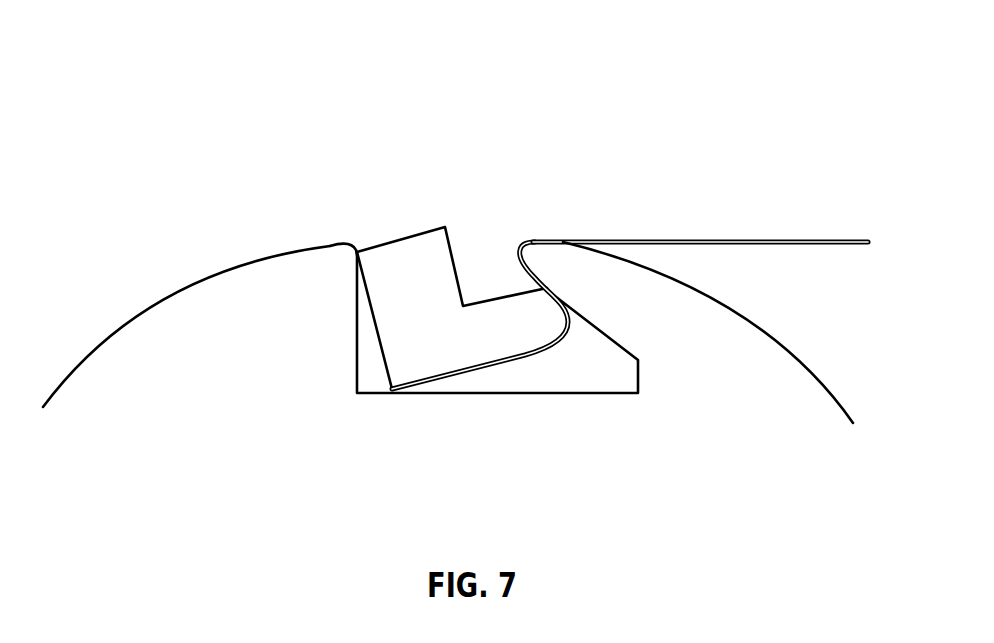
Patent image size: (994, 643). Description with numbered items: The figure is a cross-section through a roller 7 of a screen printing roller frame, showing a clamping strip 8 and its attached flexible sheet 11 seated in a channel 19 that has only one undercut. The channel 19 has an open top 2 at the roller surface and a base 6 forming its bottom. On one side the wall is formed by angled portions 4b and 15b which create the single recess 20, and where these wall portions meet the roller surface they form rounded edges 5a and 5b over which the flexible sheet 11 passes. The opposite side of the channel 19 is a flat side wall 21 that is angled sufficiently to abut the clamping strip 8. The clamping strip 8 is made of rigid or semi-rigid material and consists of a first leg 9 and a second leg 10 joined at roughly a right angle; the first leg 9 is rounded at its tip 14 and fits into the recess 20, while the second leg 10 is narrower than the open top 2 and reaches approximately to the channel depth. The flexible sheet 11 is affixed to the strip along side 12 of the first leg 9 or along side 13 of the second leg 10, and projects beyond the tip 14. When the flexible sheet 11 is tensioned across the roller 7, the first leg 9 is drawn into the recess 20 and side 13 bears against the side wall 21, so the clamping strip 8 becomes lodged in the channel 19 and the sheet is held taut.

The open top 2 is at (512, 238).
The angled portion of side wall 4b is at (568, 283).
The rounded edge 5a is at (340, 260).
The rounded edge 5b is at (543, 260).
The base 6 is at (433, 398).
The roller 7 is at (780, 332).
The clamping strip 8 is at (433, 197).
The first leg 9 is at (527, 327).
The second leg 10 is at (405, 297).
The flexible sheet 11 is at (733, 233).
The side of leg 9 12 is at (483, 360).
The side of leg 10 13 is at (375, 343).
The tip 14 is at (553, 310).
The angled portion of side wall 15b is at (647, 375).
The channel 19 is at (480, 247).
The recess 20 is at (600, 363).
The side wall 21 is at (343, 318).